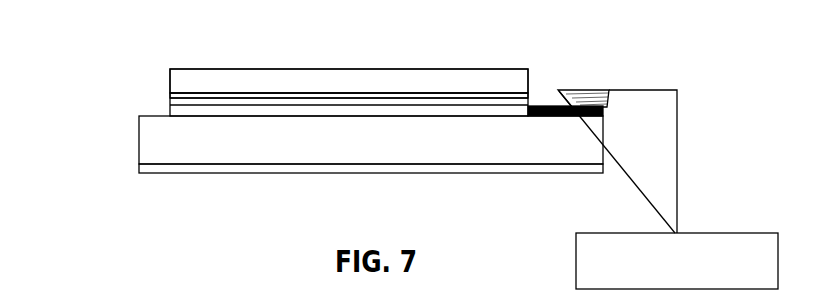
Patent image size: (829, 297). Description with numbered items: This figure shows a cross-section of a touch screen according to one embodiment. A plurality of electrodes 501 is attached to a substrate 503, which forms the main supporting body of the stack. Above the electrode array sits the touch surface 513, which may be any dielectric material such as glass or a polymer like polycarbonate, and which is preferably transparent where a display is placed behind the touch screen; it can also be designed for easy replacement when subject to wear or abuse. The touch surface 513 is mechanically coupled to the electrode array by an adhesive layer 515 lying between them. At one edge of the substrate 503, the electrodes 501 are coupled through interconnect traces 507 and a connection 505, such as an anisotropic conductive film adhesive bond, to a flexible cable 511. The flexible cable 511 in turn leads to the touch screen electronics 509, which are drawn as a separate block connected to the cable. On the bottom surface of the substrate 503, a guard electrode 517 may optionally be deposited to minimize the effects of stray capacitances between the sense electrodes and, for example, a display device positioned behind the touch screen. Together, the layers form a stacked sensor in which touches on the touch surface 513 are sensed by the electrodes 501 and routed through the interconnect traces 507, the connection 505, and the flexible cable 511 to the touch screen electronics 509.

The electrodes 501 is at (170, 106).
The substrate 503 is at (367, 146).
The connection 505 is at (612, 94).
The interconnect traces 507 is at (538, 105).
The touch screen electronics 509 is at (590, 232).
The flexible cable 511 is at (680, 140).
The touch surface 513 is at (347, 78).
The adhesive layer 515 is at (170, 87).
The guard electrode 517 is at (191, 177).